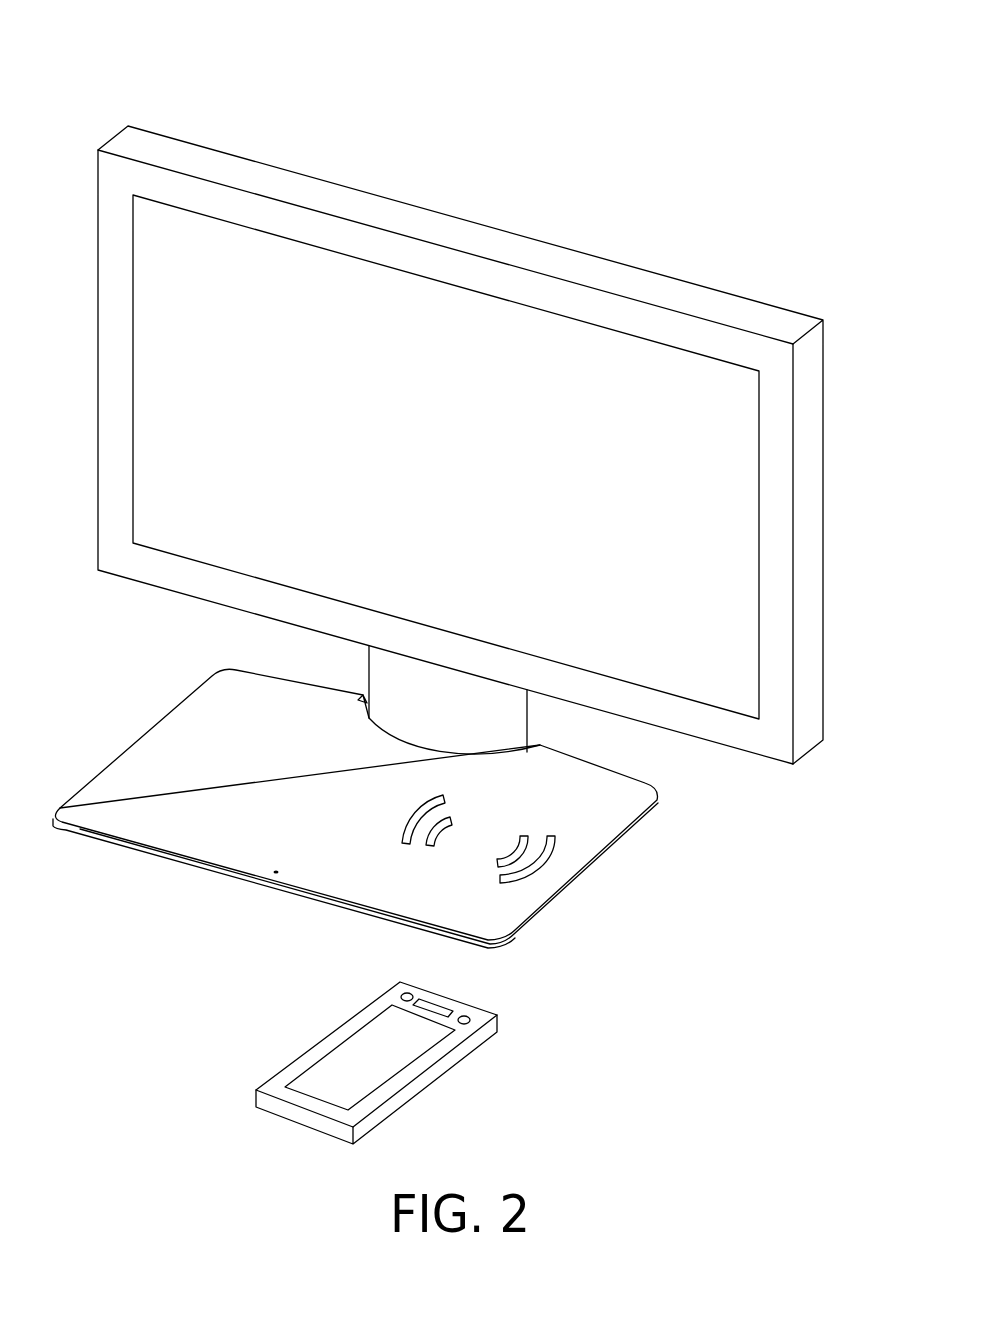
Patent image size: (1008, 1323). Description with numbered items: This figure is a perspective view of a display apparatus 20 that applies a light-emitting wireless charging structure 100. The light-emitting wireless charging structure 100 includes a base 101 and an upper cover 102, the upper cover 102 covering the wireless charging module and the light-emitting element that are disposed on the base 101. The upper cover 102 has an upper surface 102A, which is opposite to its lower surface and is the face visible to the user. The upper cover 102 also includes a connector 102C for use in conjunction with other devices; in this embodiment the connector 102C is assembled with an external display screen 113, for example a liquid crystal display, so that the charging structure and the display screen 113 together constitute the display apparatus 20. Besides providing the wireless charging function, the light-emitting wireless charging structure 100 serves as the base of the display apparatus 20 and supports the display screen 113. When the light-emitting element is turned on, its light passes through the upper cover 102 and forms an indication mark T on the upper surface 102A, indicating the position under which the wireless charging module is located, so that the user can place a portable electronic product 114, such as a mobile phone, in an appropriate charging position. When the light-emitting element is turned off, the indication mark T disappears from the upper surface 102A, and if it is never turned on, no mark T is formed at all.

The display apparatus 20 is at (52, 41).
The light-emitting wireless charging structure 100 is at (390, 810).
The base 101 is at (583, 873).
The upper cover 102 is at (390, 808).
The upper surface 102A is at (623, 798).
The connector 102C is at (508, 725).
The display screen 113 is at (835, 525).
The portable electronic product 114 is at (453, 1057).
The indication mark T is at (527, 882).